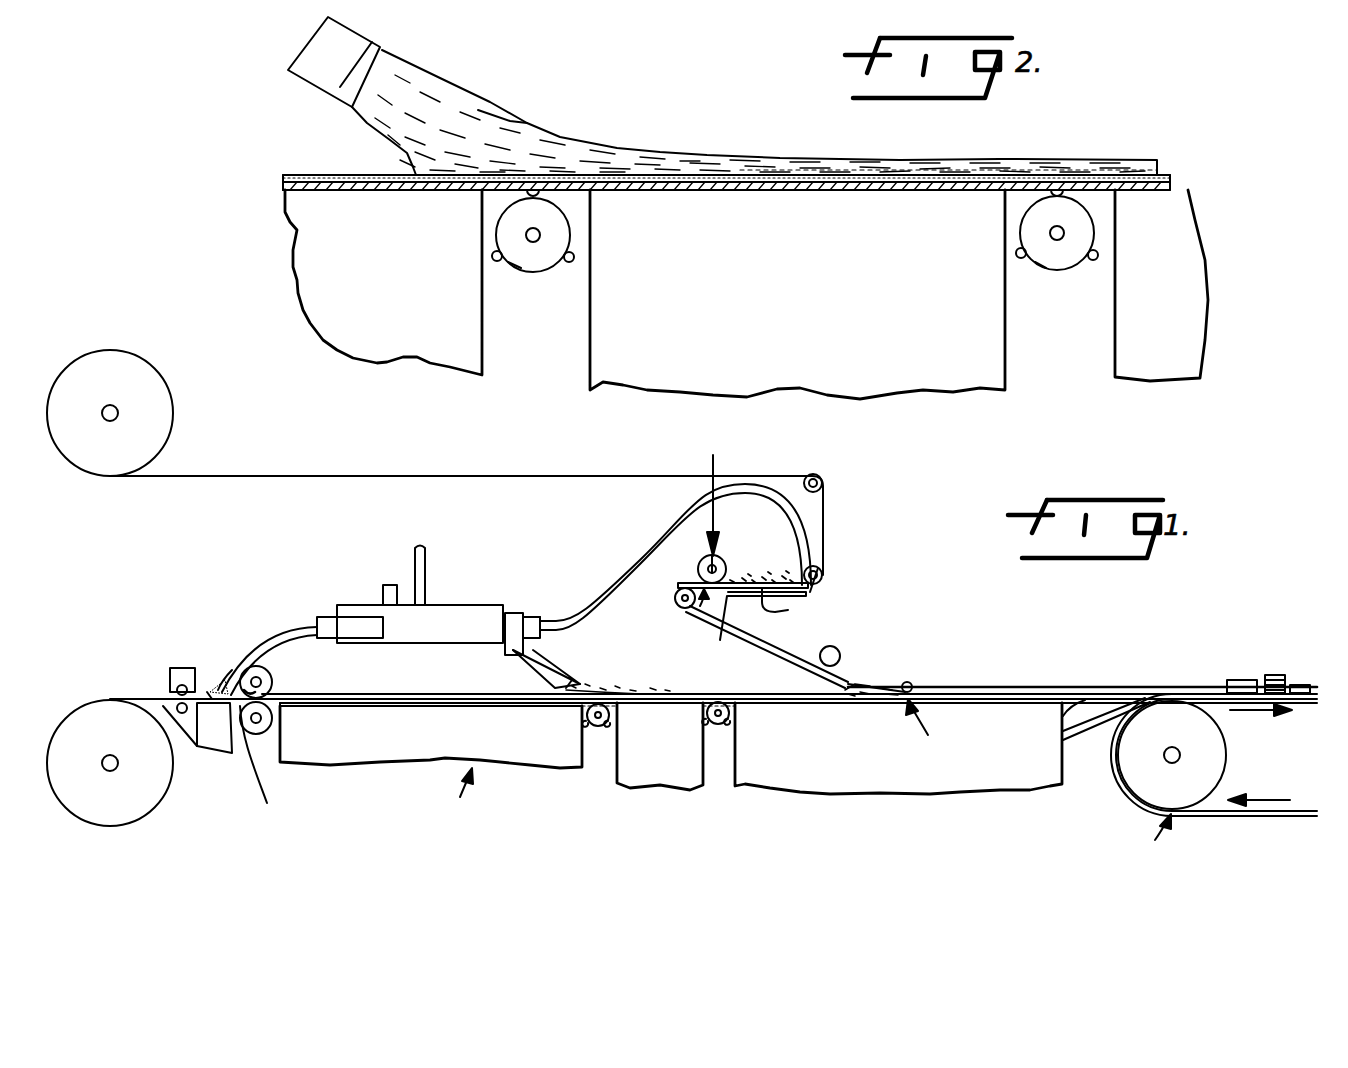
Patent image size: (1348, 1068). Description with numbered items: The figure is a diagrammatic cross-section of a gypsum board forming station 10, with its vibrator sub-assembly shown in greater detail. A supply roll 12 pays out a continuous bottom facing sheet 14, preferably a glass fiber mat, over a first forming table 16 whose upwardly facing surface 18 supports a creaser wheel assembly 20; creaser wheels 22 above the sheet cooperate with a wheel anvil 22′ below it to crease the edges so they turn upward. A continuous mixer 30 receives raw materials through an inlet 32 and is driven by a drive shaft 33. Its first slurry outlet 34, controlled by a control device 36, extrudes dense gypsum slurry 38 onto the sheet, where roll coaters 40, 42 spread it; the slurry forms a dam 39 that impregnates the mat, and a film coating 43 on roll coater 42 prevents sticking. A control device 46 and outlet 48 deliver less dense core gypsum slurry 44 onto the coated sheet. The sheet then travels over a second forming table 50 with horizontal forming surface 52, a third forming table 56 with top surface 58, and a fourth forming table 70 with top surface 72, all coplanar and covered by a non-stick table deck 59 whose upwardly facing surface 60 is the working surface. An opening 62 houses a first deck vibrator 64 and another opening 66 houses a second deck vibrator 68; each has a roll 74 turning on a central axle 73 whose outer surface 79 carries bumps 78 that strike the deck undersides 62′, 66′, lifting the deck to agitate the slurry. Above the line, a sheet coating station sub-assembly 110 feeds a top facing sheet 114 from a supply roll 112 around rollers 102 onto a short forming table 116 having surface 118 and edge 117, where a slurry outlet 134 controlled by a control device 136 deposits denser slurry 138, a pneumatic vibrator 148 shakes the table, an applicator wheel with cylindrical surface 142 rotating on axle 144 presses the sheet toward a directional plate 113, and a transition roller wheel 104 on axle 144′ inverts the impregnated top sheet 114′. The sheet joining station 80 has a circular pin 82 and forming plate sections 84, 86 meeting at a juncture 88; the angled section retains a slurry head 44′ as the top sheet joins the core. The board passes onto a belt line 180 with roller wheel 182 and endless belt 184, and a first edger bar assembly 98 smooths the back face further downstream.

In FIG. 1, the board forming station 10 is at (445, 797).
In FIG. 1, the supply roll 12 is at (80, 800).
In FIG. 2, the bottom facing sheet 14 is at (800, 176).
In FIG. 1, the bottom facing sheet 14 is at (475, 700).
In FIG. 1, the first forming table 16 is at (220, 748).
In FIG. 1, the upwardly facing surface 18 is at (207, 694).
In FIG. 1, the creaser wheel assembly 20 is at (186, 668).
In FIG. 1, the creaser wheels 22 is at (176, 688).
In FIG. 1, the wheel anvil 22′ is at (187, 751).
In FIG. 1, the continuous mixer 30 is at (440, 605).
In FIG. 1, the inlet 32 is at (393, 585).
In FIG. 1, the drive shaft 33 is at (425, 552).
In FIG. 1, the first slurry outlet 34 is at (300, 606).
In FIG. 1, the control device 36 is at (348, 617).
In FIG. 2, the dense gypsum slurry 38 is at (770, 166).
In FIG. 1, the dense gypsum slurry 38 is at (214, 690).
In FIG. 1, the dam 39 is at (260, 767).
In FIG. 1, the roll coater 40 is at (270, 680).
In FIG. 1, the roll coater 42 is at (262, 728).
In FIG. 1, the film coating 43 is at (272, 719).
In FIG. 2, the core gypsum slurry 44 is at (525, 123).
In FIG. 1, the core gypsum slurry 44 is at (586, 690).
In FIG. 1, the slurry head 44′ is at (860, 700).
In FIG. 1, the control device 46 is at (527, 646).
In FIG. 2, the outlet 48 is at (368, 52).
In FIG. 1, the outlet 48 is at (540, 672).
In FIG. 2, the second forming table 50 is at (383, 282).
In FIG. 1, the second forming table 50 is at (431, 737).
In FIG. 2, the horizontal forming surface 52 is at (400, 188).
In FIG. 1, the horizontal forming surface 52 is at (369, 673).
In FIG. 2, the third forming table 56 is at (797, 294).
In FIG. 1, the third forming table 56 is at (660, 746).
In FIG. 2, the top surface 58 is at (895, 186).
In FIG. 1, the top surface 58 is at (668, 698).
In FIG. 2, the table deck 59 is at (355, 175).
In FIG. 1, the table deck 59 is at (418, 702).
In FIG. 2, the upwardly facing surface 60 is at (290, 175).
In FIG. 1, the upwardly facing surface 60 is at (450, 702).
In FIG. 2, the opening 62 is at (532, 365).
In FIG. 1, the opening 62 is at (596, 776).
In FIG. 2, the bottom surface of table deck 62′ is at (500, 193).
In FIG. 2, the first deck vibrator 64 is at (536, 270).
In FIG. 1, the first deck vibrator 64 is at (590, 724).
In FIG. 2, the opening 66 is at (1066, 378).
In FIG. 1, the opening 66 is at (720, 782).
In FIG. 2, the bottom surface of table deck 66′ is at (1020, 192).
In FIG. 2, the second deck vibrator 68 is at (1063, 268).
In FIG. 1, the second deck vibrator 68 is at (730, 712).
In FIG. 2, the fourth forming table 70 is at (1161, 285).
In FIG. 1, the fourth forming table 70 is at (898, 748).
In FIG. 2, the top surface 72 is at (1187, 195).
In FIG. 1, the top surface 72 is at (966, 694).
In FIG. 2, the roller axle 73 is at (541, 236).
In FIG. 2, the deck vibrator rolls 74 is at (520, 266).
In FIG. 2, the bumps 78 is at (574, 259).
In FIG. 1, the bumps 78 is at (1063, 740).
In FIG. 2, the outer surface 79 is at (493, 258).
In FIG. 1, the sheet joining station 80 is at (932, 726).
In FIG. 1, the circular pin 82 is at (839, 652).
In FIG. 1, the first forming plate section 84 is at (868, 678).
In FIG. 1, the second forming plate section 86 is at (1002, 692).
In FIG. 1, the juncture 88 is at (913, 684).
In FIG. 1, the first edger bar assembly 98 is at (1278, 677).
In FIG. 1, the rollers 102 is at (823, 479).
In FIG. 1, the transition roller wheel 104 is at (680, 584).
In FIG. 1, the sheet coating station sub-assembly 110 is at (694, 496).
In FIG. 1, the supply roll 112 is at (110, 350).
In FIG. 1, the directional plate 113 is at (700, 612).
In FIG. 1, the top facing sheet 114 is at (394, 476).
In FIG. 1, the impregnated top facing sheet 114′ is at (772, 656).
In FIG. 1, the top sheet forming table 116 is at (808, 594).
In FIG. 1, the edge 117 is at (706, 636).
In FIG. 1, the upwardly facing surface 118 is at (823, 566).
In FIG. 1, the slurry outlet 134 is at (642, 548).
In FIG. 1, the control device 136 is at (535, 615).
In FIG. 1, the dense gypsum slurry 138 is at (762, 561).
In FIG. 1, the cylindrical surface 142 is at (719, 556).
In FIG. 1, the axle 144 is at (711, 562).
In FIG. 1, the axle 144′ is at (675, 598).
In FIG. 1, the pneumatic table vibrator 148 is at (773, 612).
In FIG. 1, the belt line 180 is at (1135, 779).
In FIG. 1, the roller wheel 182 is at (1222, 762).
In FIG. 1, the endless belt 184 is at (1285, 818).